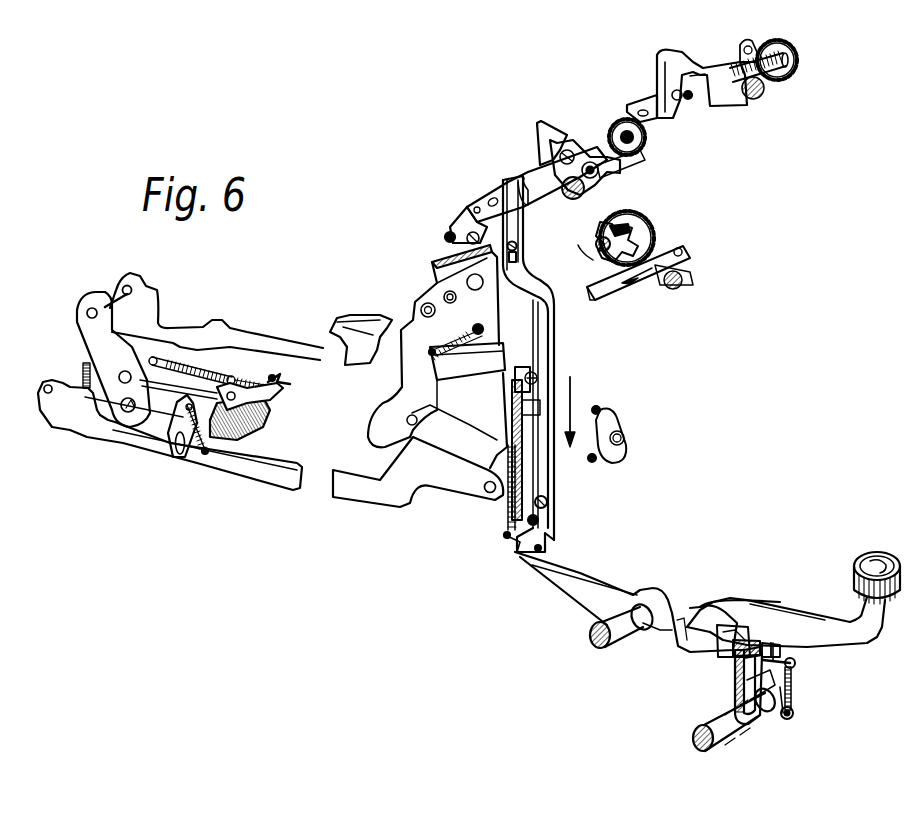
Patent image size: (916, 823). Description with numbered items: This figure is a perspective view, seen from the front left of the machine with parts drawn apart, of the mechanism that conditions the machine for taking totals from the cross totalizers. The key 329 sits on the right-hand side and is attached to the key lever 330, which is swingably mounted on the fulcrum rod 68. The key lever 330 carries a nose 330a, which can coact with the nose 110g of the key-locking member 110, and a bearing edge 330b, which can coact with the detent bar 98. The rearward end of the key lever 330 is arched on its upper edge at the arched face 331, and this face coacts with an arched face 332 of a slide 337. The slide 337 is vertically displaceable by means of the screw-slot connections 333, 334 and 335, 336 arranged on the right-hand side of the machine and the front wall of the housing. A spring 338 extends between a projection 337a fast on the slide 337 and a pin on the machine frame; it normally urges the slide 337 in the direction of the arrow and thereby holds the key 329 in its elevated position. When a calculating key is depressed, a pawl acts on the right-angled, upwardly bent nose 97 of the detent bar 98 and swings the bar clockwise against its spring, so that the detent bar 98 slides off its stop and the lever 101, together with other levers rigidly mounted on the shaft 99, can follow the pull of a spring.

The fulcrum rod 68 is at (590, 632).
The nose 97 is at (770, 640).
The detent bar 98 is at (700, 657).
The shaft 99 is at (694, 734).
The lever 101 is at (792, 695).
The key-locking member 110 is at (750, 677).
The nose 110g is at (737, 654).
The key 329 is at (873, 552).
The key lever 330 is at (872, 640).
The nose 330a is at (720, 625).
The bearing edge 330b is at (757, 640).
The arched face 331 is at (517, 555).
The arched face 332 is at (541, 547).
The screw-slot connection 333 is at (538, 520).
The screw-slot connection 334 is at (547, 502).
The screw-slot connection 335 is at (517, 258).
The screw-slot connection 336 is at (517, 247).
The slide 337 is at (537, 327).
The projection 337a is at (514, 420).
The spring 338 is at (508, 500).